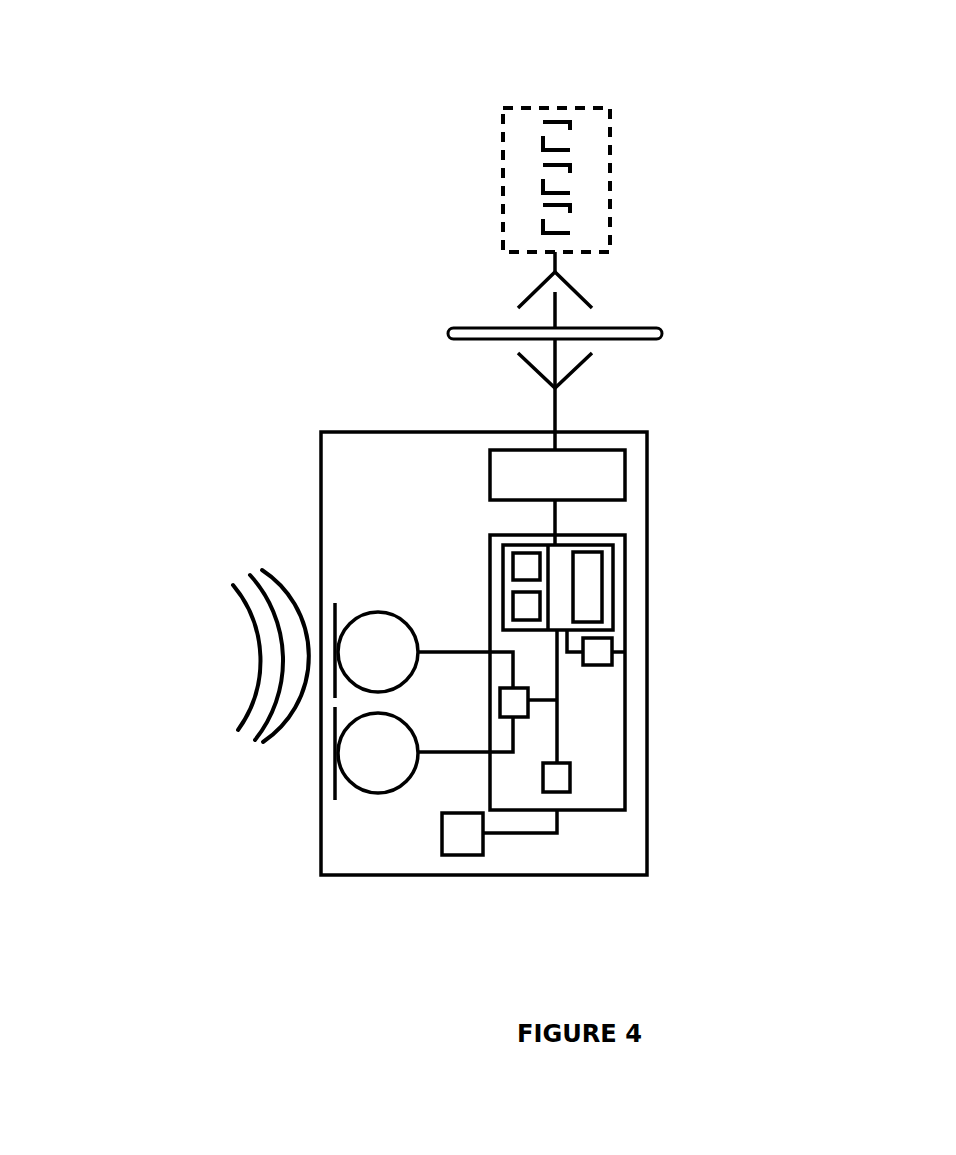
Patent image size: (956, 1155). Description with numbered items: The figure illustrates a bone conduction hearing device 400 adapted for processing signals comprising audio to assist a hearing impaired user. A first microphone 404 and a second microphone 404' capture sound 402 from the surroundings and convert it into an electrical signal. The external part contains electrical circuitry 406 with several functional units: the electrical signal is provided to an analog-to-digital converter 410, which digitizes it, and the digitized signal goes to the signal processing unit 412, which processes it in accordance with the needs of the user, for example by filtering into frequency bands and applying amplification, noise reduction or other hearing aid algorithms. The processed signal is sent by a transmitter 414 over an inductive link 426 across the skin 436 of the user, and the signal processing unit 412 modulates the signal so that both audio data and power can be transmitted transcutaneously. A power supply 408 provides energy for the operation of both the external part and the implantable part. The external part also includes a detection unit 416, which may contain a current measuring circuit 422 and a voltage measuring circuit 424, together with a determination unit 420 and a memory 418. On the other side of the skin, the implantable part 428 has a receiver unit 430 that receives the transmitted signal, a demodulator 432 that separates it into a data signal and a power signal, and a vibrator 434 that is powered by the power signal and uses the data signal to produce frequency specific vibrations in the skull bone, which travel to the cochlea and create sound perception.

The bone conduction hearing device 400 is at (250, 397).
The sound 402 is at (267, 597).
The first microphone 404 is at (367, 702).
The second microphone 404' is at (359, 781).
The electrical circuitry 406 is at (500, 780).
The power supply 408 is at (467, 822).
The analog-to-digital converter 410 is at (518, 707).
The signal processing unit 412 is at (562, 785).
The transmitter 414 is at (532, 477).
The detection unit 416 is at (490, 535).
The memory 418 is at (600, 653).
The determination unit 420 is at (580, 607).
The current measuring circuit 422 is at (527, 572).
The voltage measuring circuit 424 is at (532, 600).
The inductive link 426 is at (593, 355).
The implantable part 428 is at (613, 180).
The receiver unit 430 is at (557, 225).
The demodulator 432 is at (557, 178).
The vibrator 434 is at (555, 142).
The skin 436 is at (660, 337).